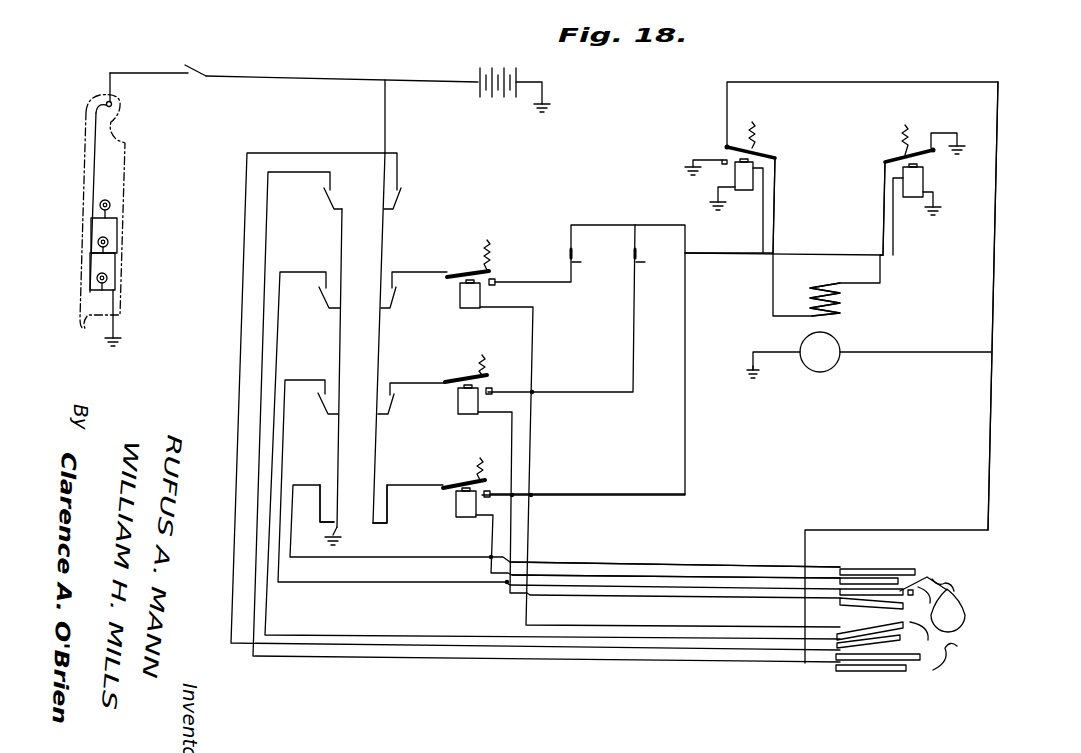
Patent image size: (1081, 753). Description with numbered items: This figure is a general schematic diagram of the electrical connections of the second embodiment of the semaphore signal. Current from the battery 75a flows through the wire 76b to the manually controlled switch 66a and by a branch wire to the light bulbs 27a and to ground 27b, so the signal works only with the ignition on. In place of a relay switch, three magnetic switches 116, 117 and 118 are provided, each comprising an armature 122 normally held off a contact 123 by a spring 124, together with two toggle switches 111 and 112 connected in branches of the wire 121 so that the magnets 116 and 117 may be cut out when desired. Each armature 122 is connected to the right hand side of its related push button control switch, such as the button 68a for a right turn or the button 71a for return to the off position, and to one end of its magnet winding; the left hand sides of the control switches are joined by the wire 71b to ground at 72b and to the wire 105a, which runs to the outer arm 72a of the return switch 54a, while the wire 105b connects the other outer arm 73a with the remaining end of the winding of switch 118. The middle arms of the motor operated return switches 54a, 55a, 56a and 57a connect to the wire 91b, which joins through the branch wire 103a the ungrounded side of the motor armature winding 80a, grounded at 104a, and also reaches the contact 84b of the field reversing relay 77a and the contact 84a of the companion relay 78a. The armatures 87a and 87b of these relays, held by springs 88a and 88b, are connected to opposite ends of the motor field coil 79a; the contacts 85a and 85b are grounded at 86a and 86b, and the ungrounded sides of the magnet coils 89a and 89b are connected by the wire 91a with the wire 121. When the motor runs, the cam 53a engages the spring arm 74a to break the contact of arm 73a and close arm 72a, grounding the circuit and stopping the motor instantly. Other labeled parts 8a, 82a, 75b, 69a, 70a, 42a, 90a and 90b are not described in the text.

The manually controlled switch 66a is at (213, 55).
The wire 76b is at (342, 61).
The battery 75a is at (509, 66).
The ground 75b is at (557, 98).
The conductor 82a is at (409, 116).
The signal unit 8a is at (72, 212).
The light bulbs 27a is at (131, 242).
The ground 27b is at (135, 325).
The button 68a is at (362, 182).
The switch contacts L 69a is at (357, 272).
The switch contacts S 70a is at (356, 389).
The button 71a is at (353, 489).
The wire 71b is at (336, 340).
The ground 72b is at (356, 543).
The armature 122 is at (461, 258).
The spring 124 is at (517, 242).
The contact 123 is at (521, 266).
The magnetic switch 116 is at (445, 301).
The magnetic switch 117 is at (452, 387).
The magnetic switch 118 is at (547, 491).
The toggle switch 111 is at (596, 263).
The toggle switch 112 is at (660, 263).
The wire 121 is at (583, 374).
The contact 84a is at (726, 146).
The contact 85a is at (692, 154).
The ground 86a is at (671, 176).
The field coil 89a is at (716, 179).
The ground 90a is at (723, 211).
The spring 88a is at (776, 124).
The companion relay 78a is at (817, 124).
The armature 87a is at (797, 195).
The spring 88b is at (877, 125).
The field reversing relay 77a is at (909, 112).
The contact 85b is at (933, 146).
The ground 86b is at (972, 135).
The armature 87b is at (871, 195).
The contact 84b is at (936, 164).
The field coil 89b is at (946, 181).
The ground 90b is at (958, 207).
The wire 91a is at (784, 241).
The motor field coil 79a is at (855, 299).
The lamp 42a is at (852, 347).
The motor armature winding 80a is at (812, 389).
The ground 104a is at (749, 390).
The branch wire 103a is at (921, 358).
The wire 91b is at (1020, 306).
The wire 105a is at (675, 551).
The wire 105b is at (676, 557).
The outer arm 73a is at (855, 580).
The motor operated return switch 54a is at (871, 571).
The outer arm 72a is at (931, 562).
The motor operated return switch 55a is at (940, 609).
The cam 53a is at (977, 610).
The motor operated return switch 56a is at (859, 626).
The motor operated return switch 57a is at (868, 672).
The spring arm 74a is at (944, 674).